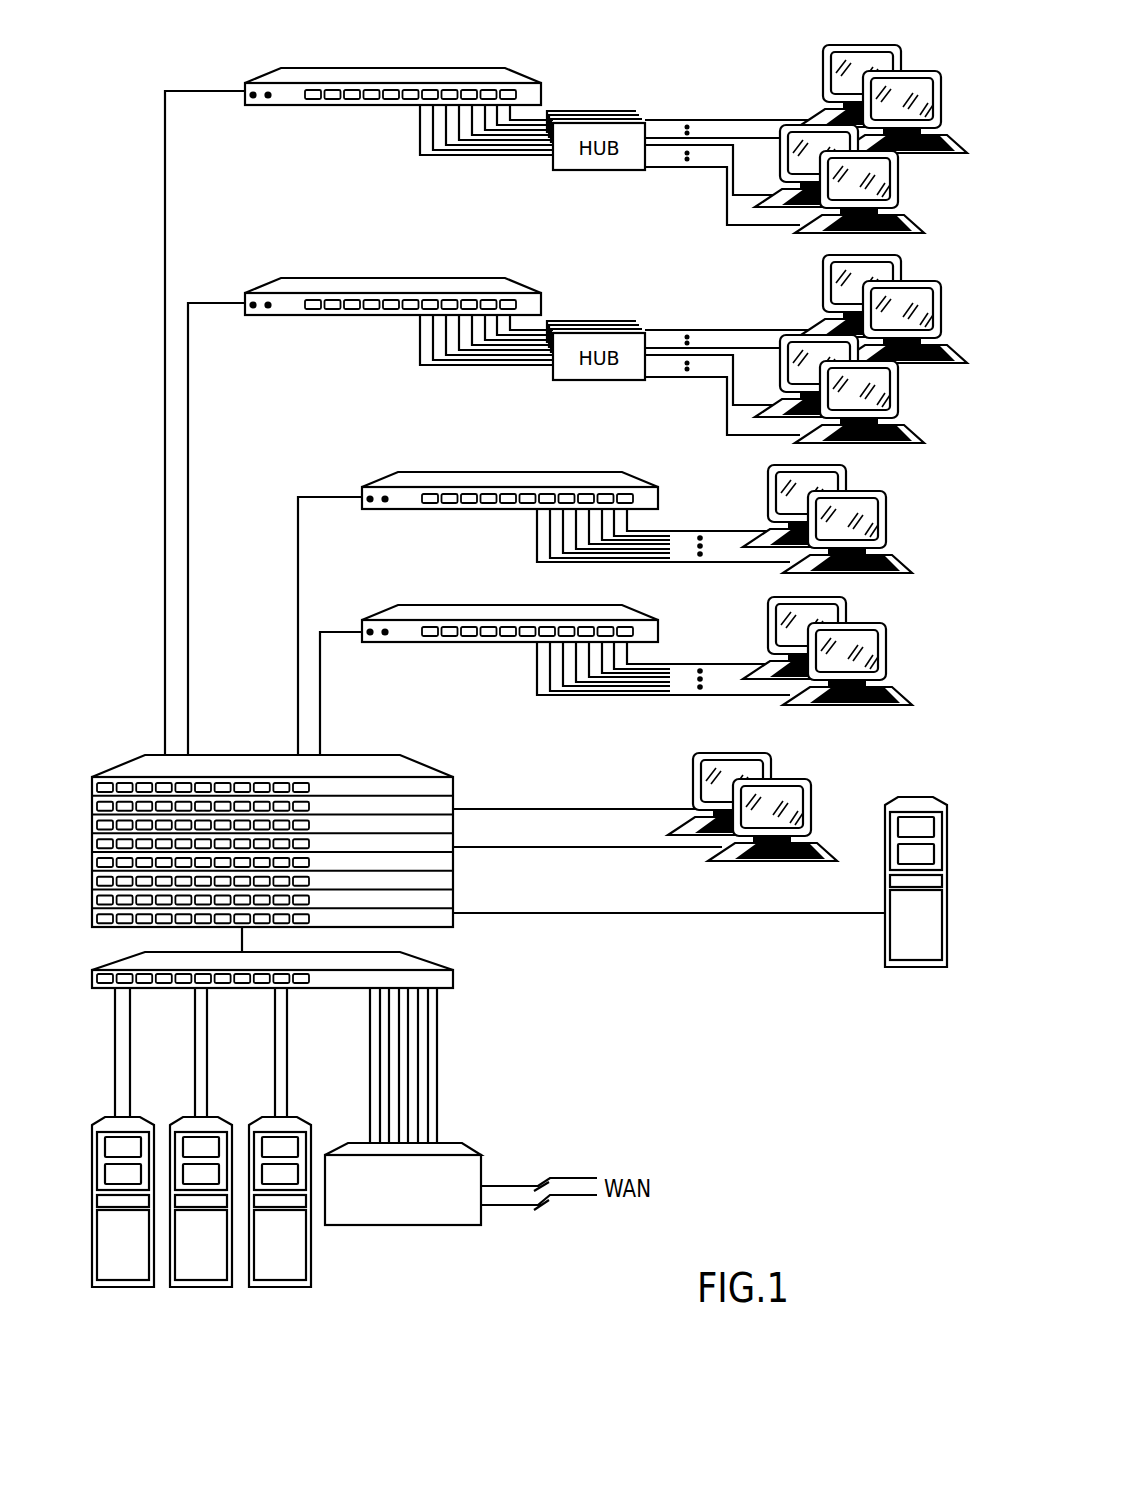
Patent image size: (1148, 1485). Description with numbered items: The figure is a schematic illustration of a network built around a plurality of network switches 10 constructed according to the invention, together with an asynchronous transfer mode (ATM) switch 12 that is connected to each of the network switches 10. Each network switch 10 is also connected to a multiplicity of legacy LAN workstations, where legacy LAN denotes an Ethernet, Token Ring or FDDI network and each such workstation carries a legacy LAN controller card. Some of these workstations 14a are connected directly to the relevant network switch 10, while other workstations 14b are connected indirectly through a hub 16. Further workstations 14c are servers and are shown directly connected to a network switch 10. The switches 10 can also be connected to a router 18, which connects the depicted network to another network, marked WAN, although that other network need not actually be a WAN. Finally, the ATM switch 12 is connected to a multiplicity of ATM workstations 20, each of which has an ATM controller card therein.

The network switch 10 is at (318, 73).
The asynchronous transfer mode (ATM) switch 12 is at (410, 766).
The workstations 14a is at (884, 522).
The workstations 14b is at (832, 163).
The workstations 14c is at (120, 1287).
The hub 16 is at (609, 124).
The router 18 is at (457, 1148).
The ATM workstations 20 is at (912, 802).